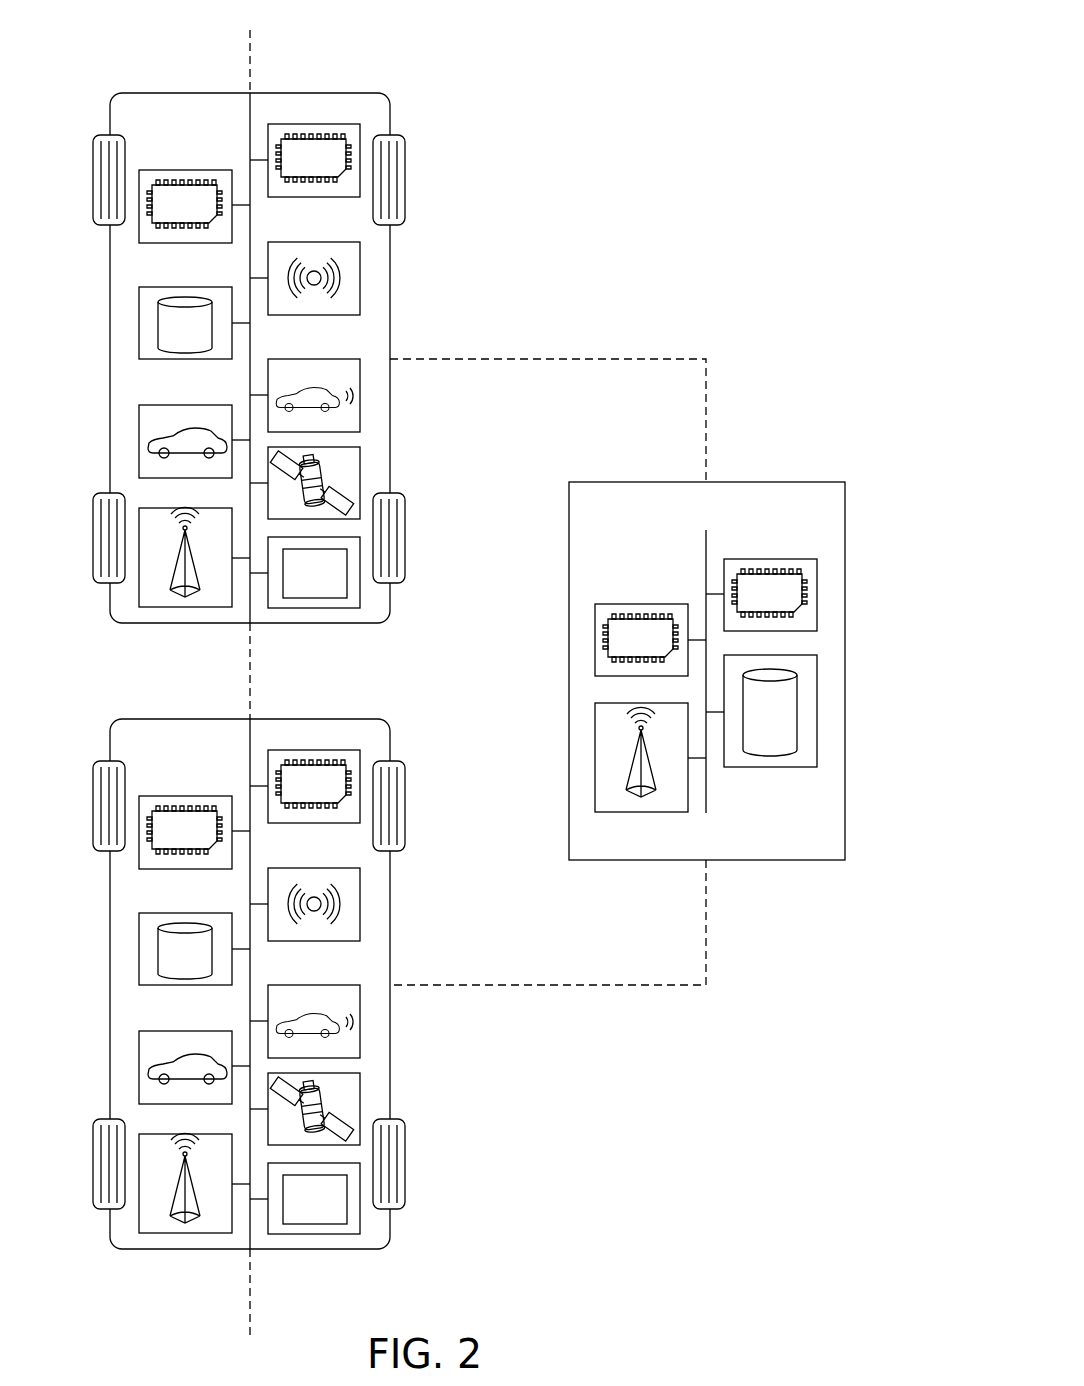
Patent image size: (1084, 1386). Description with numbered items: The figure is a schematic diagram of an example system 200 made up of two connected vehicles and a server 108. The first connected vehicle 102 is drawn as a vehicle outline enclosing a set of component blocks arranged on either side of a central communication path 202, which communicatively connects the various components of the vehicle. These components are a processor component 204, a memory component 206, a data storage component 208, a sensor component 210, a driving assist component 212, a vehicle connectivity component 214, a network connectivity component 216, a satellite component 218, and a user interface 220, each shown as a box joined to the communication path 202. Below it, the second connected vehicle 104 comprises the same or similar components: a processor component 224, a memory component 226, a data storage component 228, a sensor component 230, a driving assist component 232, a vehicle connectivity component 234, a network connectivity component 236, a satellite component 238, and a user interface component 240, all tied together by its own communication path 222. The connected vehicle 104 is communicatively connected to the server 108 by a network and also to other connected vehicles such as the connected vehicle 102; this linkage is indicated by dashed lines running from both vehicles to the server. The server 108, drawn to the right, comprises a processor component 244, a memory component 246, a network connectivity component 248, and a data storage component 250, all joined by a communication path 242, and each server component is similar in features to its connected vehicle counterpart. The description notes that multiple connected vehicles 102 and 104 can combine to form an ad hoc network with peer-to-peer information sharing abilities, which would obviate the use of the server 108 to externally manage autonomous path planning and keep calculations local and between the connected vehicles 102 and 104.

The system 200 is at (724, 90).
The connected vehicle 102 is at (155, 93).
The connected vehicle 104 is at (249, 956).
The server 108 is at (780, 482).
The communication path 202 is at (247, 117).
The processor component 204 is at (186, 170).
The memory component 206 is at (315, 124).
The data storage component 208 is at (210, 287).
The sensor component 210 is at (283, 242).
The driving assist component 212 is at (210, 405).
The vehicle connectivity component 214 is at (285, 359).
The network connectivity component 216 is at (185, 607).
The satellite component 218 is at (360, 483).
The user interface 220 is at (310, 608).
The communication path 222 is at (221, 964).
The processor component 224 is at (194, 804).
The memory component 226 is at (305, 752).
The data storage component 228 is at (188, 928).
The sensor component 230 is at (305, 885).
The driving assist component 232 is at (194, 1048).
The vehicle connectivity component 234 is at (305, 1003).
The network connectivity component 236 is at (194, 1210).
The satellite component 238 is at (350, 1109).
The user interface component 240 is at (305, 1229).
The communication path 242 is at (706, 783).
The processor component 244 is at (645, 604).
The memory component 246 is at (770, 559).
The network connectivity component 248 is at (595, 758).
The data storage component 250 is at (817, 712).